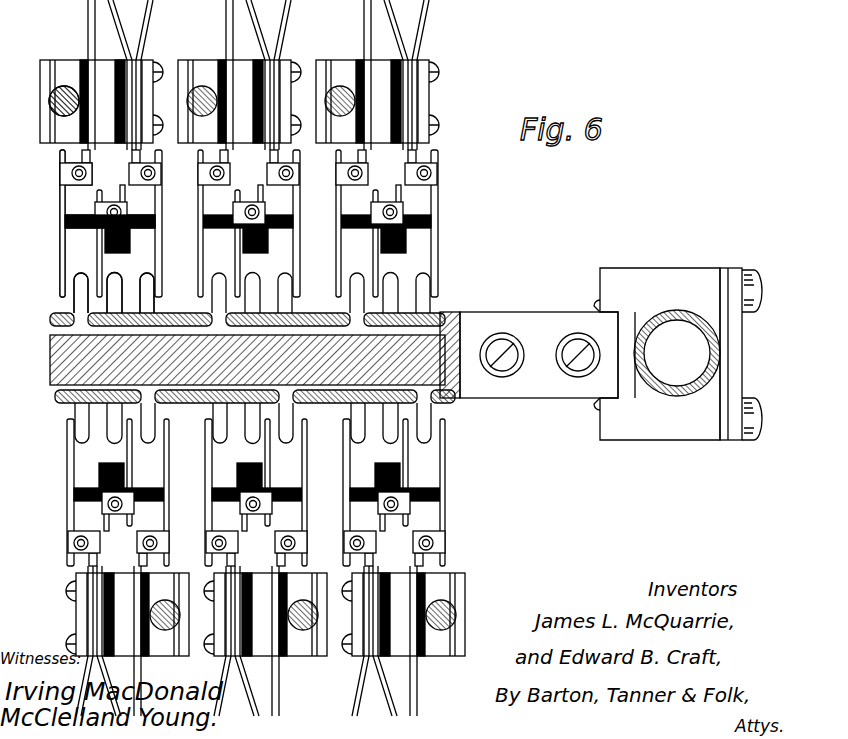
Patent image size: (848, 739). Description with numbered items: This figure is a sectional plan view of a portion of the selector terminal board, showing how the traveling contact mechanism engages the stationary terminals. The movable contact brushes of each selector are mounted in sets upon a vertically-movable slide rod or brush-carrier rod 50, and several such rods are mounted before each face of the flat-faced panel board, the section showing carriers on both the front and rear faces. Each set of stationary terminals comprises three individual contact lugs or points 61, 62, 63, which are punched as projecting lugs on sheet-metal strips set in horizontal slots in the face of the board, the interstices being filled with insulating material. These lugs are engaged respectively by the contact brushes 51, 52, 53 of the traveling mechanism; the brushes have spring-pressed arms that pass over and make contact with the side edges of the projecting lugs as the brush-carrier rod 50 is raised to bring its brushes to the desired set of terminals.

The brush-carrier rod 50 is at (62, 96).
The contact brush 51 is at (439, 190).
The contact brush 52 is at (97, 196).
The contact brush 53 is at (66, 222).
The contact lug 61 is at (150, 302).
The contact lug 62 is at (114, 290).
The contact lug 63 is at (80, 296).